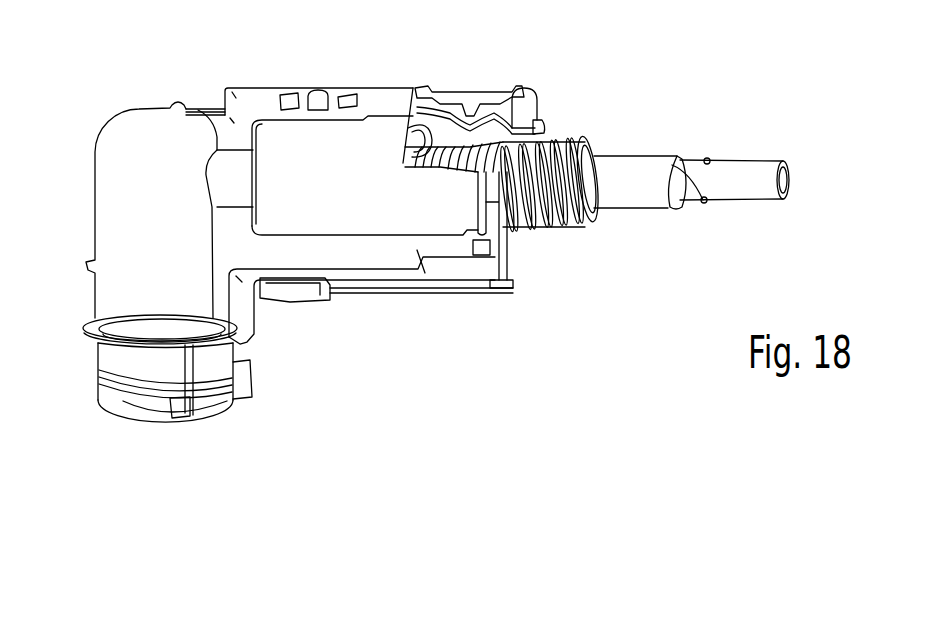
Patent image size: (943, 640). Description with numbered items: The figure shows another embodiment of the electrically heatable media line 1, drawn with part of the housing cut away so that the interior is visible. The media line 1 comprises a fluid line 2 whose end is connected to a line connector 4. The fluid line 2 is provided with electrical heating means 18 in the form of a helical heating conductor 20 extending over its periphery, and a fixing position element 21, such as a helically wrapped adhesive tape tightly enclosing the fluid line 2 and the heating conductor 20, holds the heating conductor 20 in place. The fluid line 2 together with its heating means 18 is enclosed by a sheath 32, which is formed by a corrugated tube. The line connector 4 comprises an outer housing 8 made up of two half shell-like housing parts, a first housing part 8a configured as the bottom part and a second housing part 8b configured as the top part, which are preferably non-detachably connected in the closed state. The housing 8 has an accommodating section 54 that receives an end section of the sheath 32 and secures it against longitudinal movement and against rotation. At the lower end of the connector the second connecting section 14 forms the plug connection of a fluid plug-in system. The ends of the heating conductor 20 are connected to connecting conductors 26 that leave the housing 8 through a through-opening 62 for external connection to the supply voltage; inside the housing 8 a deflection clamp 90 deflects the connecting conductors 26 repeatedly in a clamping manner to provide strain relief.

The electrically heatable media line 1 is at (648, 83).
The fluid line 2 is at (752, 165).
The line connector 4 is at (135, 92).
The housing 8 is at (120, 184).
The first housing part 8a is at (252, 318).
The second housing part 8b is at (238, 302).
The second connecting section 14 is at (118, 417).
The electrical heating means 18 is at (692, 206).
The heating conductor 20 is at (709, 158).
The fixing position element 21 is at (640, 188).
The connecting conductor 26 is at (545, 121).
The sheath 32 is at (560, 167).
The accommodating section 54 is at (517, 232).
The through-opening 62 is at (514, 106).
The deflection clamp 90 is at (478, 95).